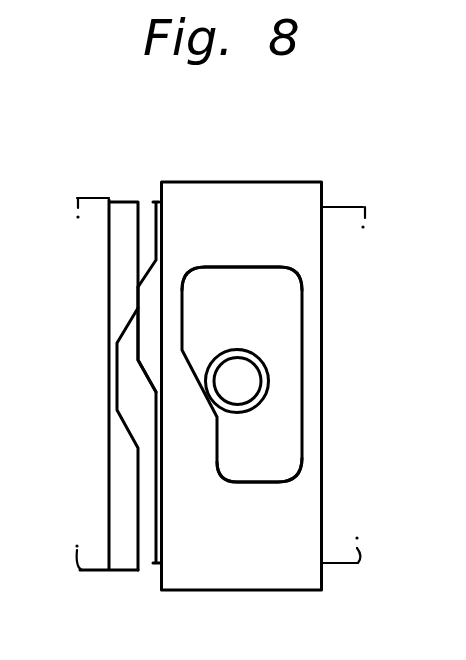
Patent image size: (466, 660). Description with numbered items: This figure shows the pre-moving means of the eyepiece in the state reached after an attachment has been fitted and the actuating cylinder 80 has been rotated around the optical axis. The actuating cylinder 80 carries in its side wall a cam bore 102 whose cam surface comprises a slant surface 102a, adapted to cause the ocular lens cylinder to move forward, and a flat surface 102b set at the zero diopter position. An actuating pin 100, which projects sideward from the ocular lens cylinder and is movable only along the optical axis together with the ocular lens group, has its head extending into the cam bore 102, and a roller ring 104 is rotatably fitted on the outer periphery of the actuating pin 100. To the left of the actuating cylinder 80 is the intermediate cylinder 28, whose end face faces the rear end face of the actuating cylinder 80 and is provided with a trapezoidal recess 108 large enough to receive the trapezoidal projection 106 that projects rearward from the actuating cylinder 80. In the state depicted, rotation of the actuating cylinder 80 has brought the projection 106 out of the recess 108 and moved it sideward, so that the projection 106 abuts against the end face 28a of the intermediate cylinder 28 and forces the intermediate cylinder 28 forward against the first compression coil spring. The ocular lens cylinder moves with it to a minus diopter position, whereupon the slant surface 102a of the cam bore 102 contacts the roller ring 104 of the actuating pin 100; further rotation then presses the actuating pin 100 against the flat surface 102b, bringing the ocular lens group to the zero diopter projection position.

The intermediate cylinder 28 is at (96, 563).
The end face of the intermediate cylinder 28a is at (140, 227).
The actuating cylinder 80 is at (311, 199).
The actuating pin 100 is at (250, 374).
The cam bore 102 is at (288, 431).
The slant surface 102a is at (192, 366).
The flat surface 102b is at (221, 446).
The roller ring 104 is at (265, 391).
The trapezoidal projection 106 is at (137, 323).
The trapezoidal recess 108 is at (124, 378).